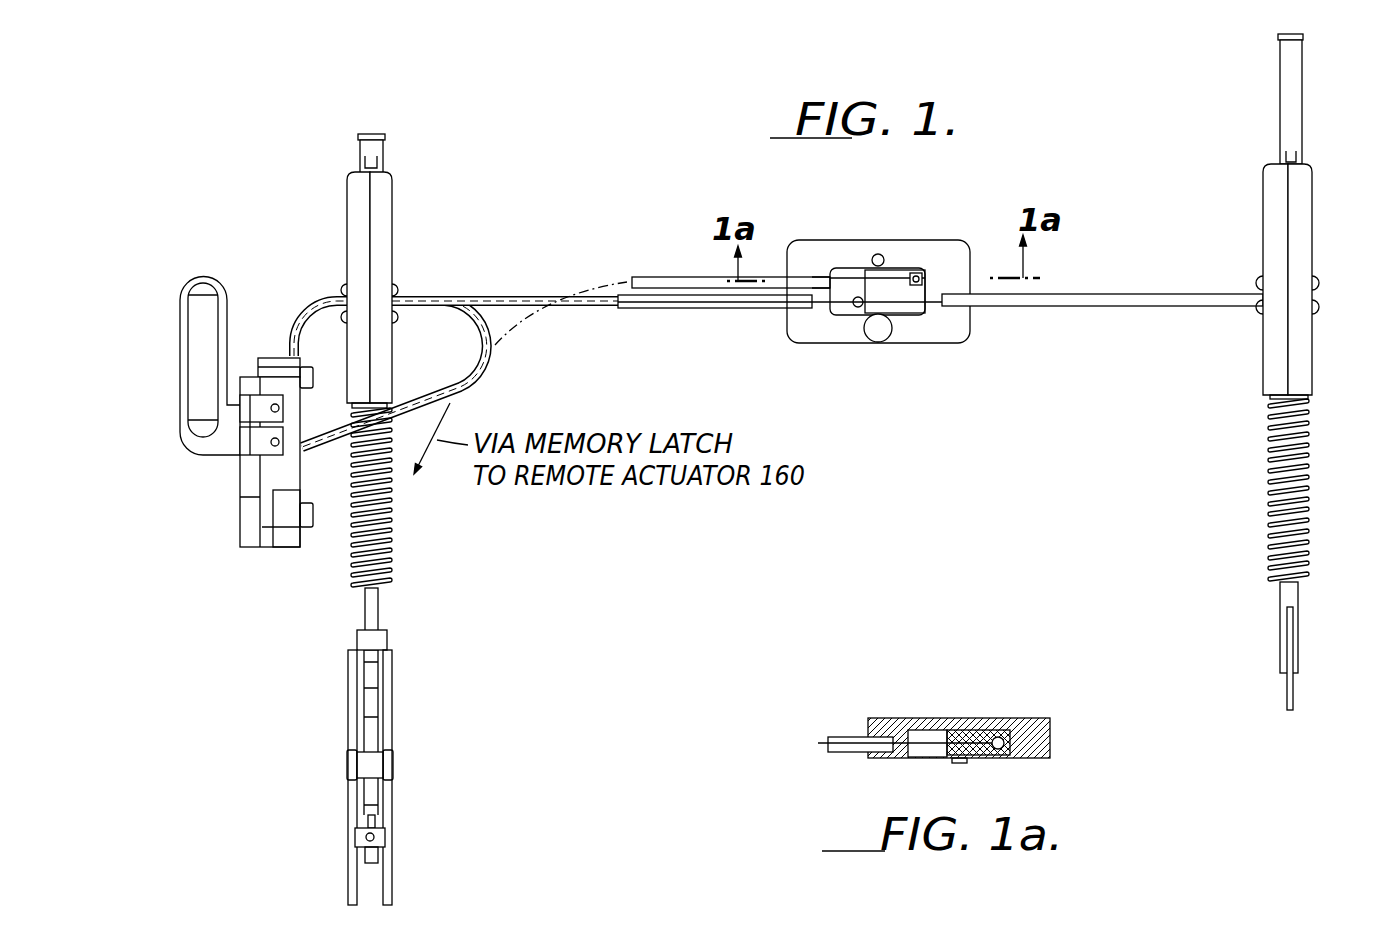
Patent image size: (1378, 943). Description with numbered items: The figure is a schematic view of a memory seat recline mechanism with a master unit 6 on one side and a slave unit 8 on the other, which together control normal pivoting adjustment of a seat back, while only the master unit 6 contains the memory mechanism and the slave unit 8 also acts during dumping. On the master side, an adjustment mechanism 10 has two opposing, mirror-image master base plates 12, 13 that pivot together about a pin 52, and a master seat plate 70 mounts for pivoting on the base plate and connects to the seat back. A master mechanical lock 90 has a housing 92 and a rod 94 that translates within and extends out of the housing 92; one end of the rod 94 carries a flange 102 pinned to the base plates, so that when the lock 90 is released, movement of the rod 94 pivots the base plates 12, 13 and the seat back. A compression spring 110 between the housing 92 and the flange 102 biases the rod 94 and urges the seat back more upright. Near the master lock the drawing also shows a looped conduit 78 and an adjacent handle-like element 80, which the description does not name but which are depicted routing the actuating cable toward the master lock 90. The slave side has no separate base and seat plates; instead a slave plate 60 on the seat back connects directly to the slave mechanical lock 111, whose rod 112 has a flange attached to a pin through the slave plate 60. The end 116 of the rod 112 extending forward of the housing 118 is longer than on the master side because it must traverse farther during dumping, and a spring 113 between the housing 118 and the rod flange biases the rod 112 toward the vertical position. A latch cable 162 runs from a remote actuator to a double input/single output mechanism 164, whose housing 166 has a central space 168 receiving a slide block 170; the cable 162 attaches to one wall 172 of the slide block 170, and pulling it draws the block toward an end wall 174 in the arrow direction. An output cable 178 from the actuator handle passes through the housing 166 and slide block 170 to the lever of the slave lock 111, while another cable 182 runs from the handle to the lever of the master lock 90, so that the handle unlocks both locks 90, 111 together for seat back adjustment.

The master unit 6 is at (365, 383).
The slave unit 8 is at (1288, 361).
The adjustment mechanism 10 is at (377, 757).
The master base plate 12 is at (356, 642).
The opposing base plate 13 is at (375, 646).
The pin 52 is at (360, 764).
The slave plate 60 is at (1293, 618).
The master seat plate 70 is at (355, 838).
The cable conduit 78 is at (321, 303).
The handle 80 is at (190, 340).
The master mechanical lock 90 is at (393, 363).
The housing 92 is at (350, 233).
The rod 94 is at (360, 150).
The flange 102 is at (364, 611).
The compression spring 110 is at (355, 553).
The slave mechanical lock 111 is at (1272, 248).
The rod 112 is at (1303, 125).
The spring 113 is at (1308, 458).
The end of the rod 116 is at (1305, 38).
The housing 118 is at (1300, 345).
The latch cable 162 is at (670, 278).
The double input/single output mechanism 164 is at (872, 269).
The housing 166 is at (792, 330).
The central space 168 is at (842, 290).
The slide block 170 is at (895, 272).
The wall of the slide block 172 is at (913, 270).
The end wall 174 is at (826, 290).
The output cable 178 is at (1037, 306).
The cable 182 is at (483, 374).